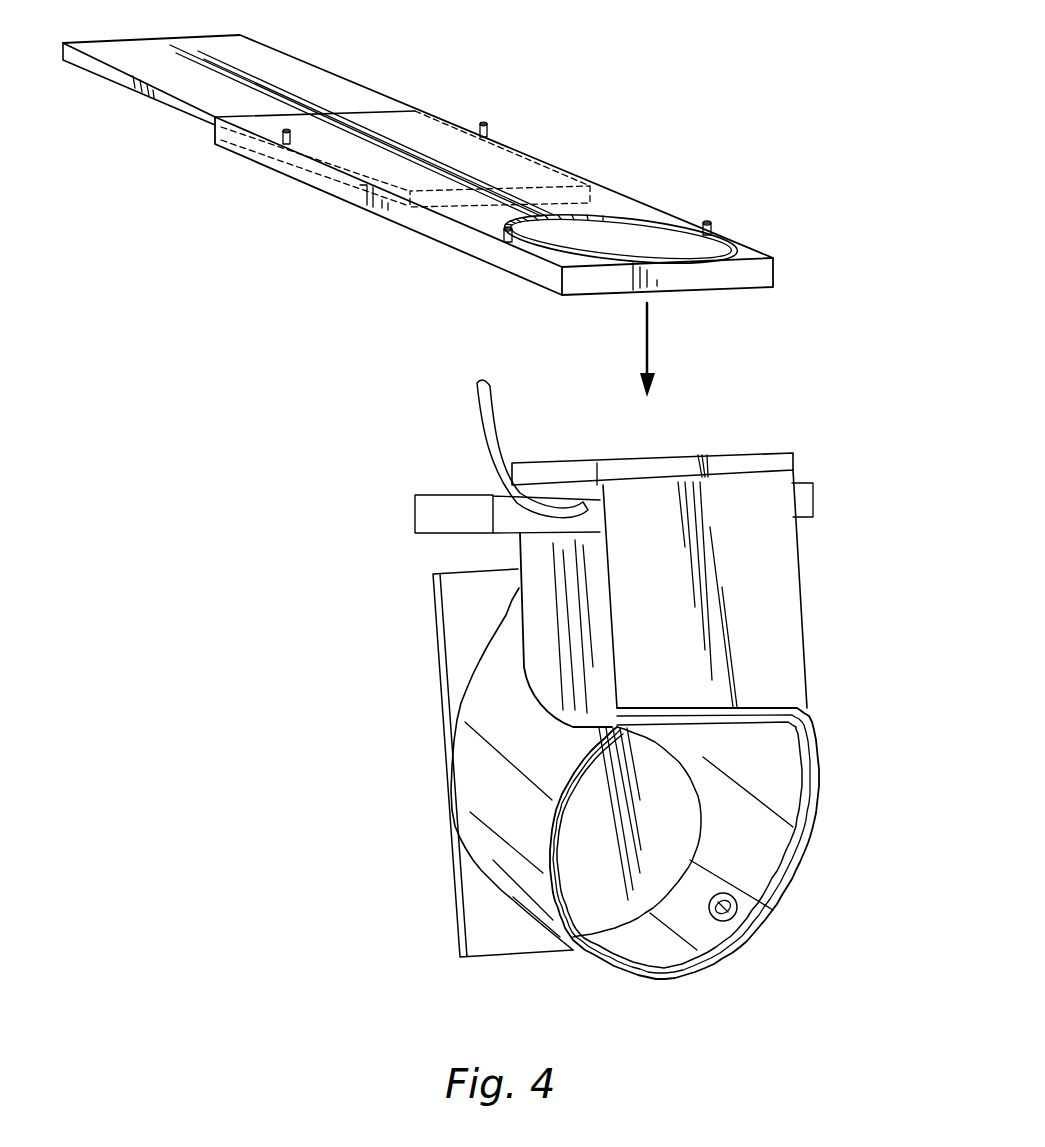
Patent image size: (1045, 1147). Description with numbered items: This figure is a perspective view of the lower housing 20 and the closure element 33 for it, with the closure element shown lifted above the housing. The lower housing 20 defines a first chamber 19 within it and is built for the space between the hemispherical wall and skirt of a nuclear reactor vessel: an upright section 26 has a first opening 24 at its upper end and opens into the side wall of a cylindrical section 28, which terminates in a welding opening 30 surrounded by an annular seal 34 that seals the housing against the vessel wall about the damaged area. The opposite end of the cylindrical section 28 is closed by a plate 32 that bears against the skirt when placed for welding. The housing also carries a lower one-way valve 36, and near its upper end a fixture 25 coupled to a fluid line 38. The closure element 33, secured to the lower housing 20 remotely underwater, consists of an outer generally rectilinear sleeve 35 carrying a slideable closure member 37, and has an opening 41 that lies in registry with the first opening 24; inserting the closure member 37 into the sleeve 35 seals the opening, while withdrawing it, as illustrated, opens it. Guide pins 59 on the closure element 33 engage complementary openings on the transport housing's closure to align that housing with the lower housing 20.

The first chamber 19 is at (670, 827).
The lower housing 20 is at (503, 683).
The first opening 24 is at (700, 462).
The fixture 25 is at (577, 507).
The upright section 26 is at (548, 643).
The cylindrical section 28 is at (513, 863).
The welding opening 30 is at (803, 786).
The plate 32 is at (460, 587).
The closure element 33 is at (550, 167).
The annular seal 34 is at (817, 760).
The rectilinear sleeve 35 is at (317, 177).
The lower one-way valve 36 is at (717, 912).
The closure member 37 is at (285, 72).
The fluid line 38 is at (480, 422).
The opening 41 is at (672, 226).
The guide pins 59 is at (708, 218).